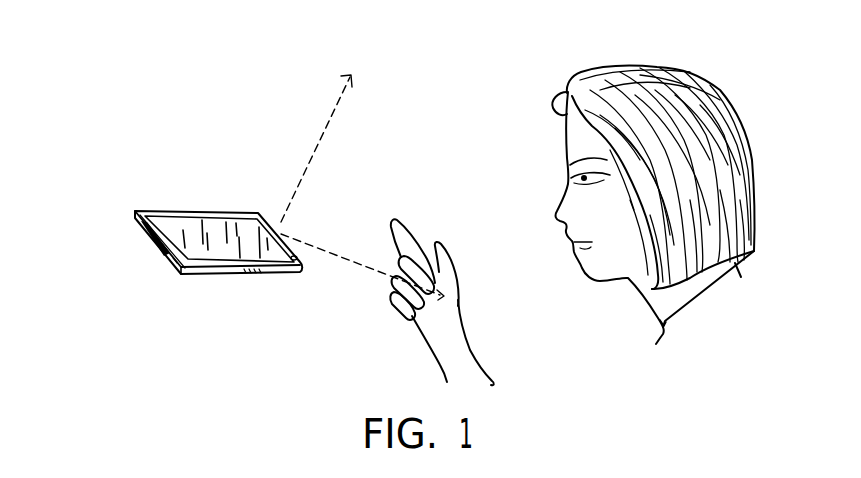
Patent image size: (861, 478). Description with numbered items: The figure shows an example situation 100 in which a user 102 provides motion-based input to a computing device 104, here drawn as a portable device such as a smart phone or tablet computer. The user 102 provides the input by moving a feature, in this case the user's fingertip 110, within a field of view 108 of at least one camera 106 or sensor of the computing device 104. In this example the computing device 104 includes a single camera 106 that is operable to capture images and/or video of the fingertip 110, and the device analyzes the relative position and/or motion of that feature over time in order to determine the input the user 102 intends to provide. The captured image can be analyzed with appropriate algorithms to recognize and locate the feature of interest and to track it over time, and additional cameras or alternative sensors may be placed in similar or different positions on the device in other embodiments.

The example situation 100 is at (92, 98).
The user 102 is at (518, 118).
The computing device 104 is at (227, 276).
The camera 106 is at (298, 259).
The field of view 108 is at (328, 122).
The fingertip 110 is at (413, 230).